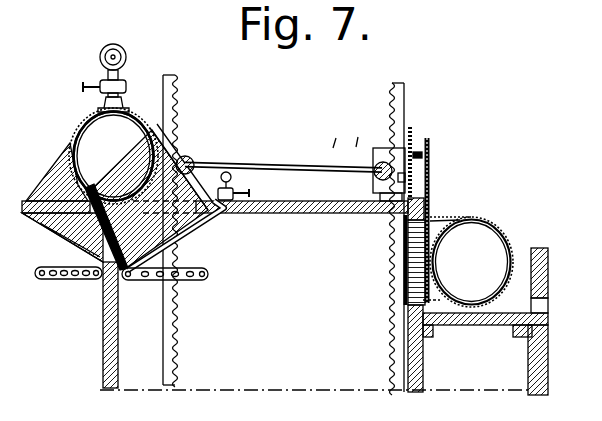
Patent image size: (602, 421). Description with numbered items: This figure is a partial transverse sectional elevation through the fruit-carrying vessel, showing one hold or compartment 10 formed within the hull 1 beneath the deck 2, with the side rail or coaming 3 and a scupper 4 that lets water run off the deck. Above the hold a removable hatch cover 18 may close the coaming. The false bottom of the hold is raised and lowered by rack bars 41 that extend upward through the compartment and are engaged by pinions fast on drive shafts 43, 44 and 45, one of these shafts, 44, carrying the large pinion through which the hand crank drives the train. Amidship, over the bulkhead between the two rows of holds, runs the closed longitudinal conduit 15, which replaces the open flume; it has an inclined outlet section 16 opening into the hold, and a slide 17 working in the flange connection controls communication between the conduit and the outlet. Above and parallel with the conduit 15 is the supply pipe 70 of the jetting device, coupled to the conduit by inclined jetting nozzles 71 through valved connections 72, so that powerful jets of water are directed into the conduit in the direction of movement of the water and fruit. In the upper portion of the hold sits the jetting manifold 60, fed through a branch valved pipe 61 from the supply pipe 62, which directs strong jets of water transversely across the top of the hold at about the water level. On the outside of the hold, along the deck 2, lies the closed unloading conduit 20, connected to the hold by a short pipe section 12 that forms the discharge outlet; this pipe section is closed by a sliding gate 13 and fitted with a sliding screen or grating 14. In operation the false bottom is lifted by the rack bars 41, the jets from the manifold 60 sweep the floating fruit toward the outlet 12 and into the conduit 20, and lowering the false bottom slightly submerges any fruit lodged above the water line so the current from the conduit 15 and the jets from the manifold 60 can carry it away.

The hull 1 is at (548, 361).
The deck 2 is at (495, 327).
The side rails or coaming 3 is at (549, 270).
The scuppers 4 is at (549, 303).
The hold or compartment 10 is at (314, 360).
The pipe section 12 is at (412, 270).
The sliding gate 13 is at (433, 184).
The sliding screen or grating 14 is at (413, 175).
The closed conduit 15 is at (77, 128).
The outlet section 16 is at (78, 254).
The slide 17 is at (107, 198).
The hatch cover 18 is at (338, 218).
The closed conduit 20 is at (480, 226).
The rack bars 41 is at (172, 352).
The drive shaft 43 is at (376, 178).
The drive shaft 44 is at (320, 165).
The drive shaft 45 is at (190, 160).
The jetting device or manifold 60 is at (195, 279).
The branch valved pipe 61 is at (212, 230).
The supply pipe 62 is at (233, 179).
The supply pipe 70 is at (125, 57).
The inclined jetting nozzles 71 is at (124, 107).
The valved connections 72 is at (124, 86).